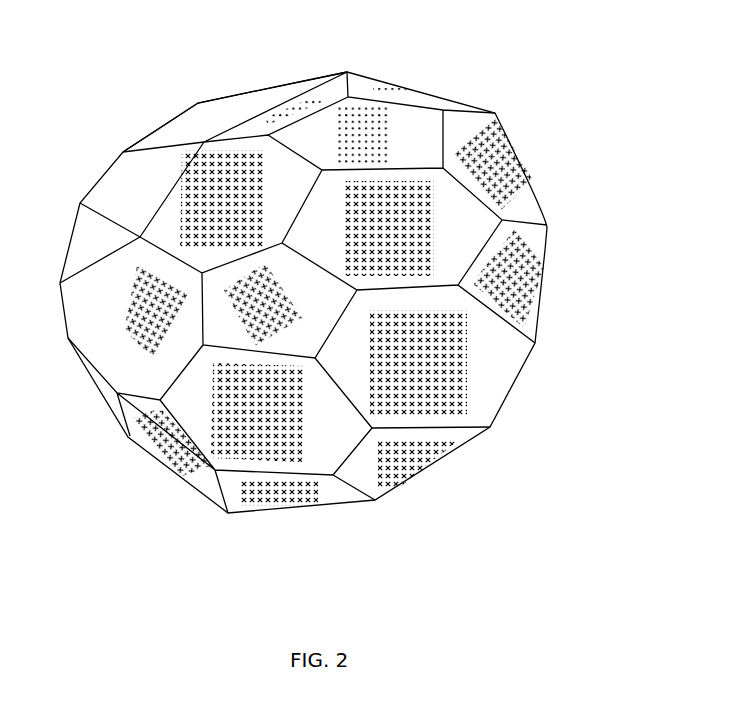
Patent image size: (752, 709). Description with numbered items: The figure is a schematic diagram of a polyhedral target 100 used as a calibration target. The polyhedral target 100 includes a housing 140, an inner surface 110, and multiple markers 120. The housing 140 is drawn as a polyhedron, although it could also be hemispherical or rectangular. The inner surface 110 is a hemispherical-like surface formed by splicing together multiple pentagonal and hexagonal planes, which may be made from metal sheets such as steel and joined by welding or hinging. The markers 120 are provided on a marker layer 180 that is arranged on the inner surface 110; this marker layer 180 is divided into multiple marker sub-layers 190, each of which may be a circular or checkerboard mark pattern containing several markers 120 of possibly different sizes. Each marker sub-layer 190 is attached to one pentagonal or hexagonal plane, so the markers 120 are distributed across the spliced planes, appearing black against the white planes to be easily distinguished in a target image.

The polyhedral target 100 is at (82, 97).
The inner surface 110 is at (450, 197).
The markers 120 is at (462, 411).
The housing 140 is at (200, 122).
The marker layer 180 is at (427, 547).
The marker sub-layers 190 is at (307, 440).